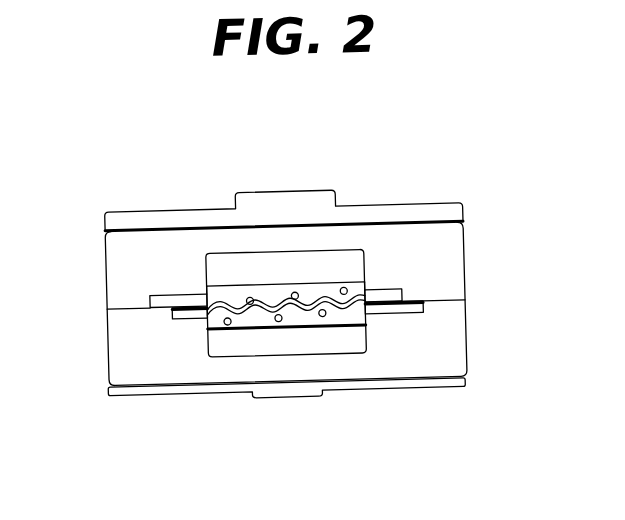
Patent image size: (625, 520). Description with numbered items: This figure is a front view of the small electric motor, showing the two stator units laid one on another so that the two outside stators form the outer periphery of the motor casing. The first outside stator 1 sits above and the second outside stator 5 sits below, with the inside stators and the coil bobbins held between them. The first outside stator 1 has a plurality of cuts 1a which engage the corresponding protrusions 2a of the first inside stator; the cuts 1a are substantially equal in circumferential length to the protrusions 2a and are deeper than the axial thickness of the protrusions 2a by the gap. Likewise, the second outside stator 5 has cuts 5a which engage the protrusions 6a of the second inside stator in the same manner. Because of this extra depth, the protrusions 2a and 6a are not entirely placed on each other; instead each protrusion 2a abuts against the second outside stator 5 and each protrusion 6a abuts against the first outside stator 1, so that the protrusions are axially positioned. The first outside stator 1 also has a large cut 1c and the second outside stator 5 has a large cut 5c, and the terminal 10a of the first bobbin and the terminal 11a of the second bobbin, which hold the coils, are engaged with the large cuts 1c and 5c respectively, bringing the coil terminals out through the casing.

The first outside stator 1 is at (446, 254).
The cuts 1a is at (176, 278).
The large cut 1c is at (227, 269).
The protrusions 2a is at (162, 293).
The second outside stator 5 is at (444, 362).
The cuts 5a is at (182, 327).
The large cut 5c is at (238, 342).
The protrusions 6a is at (172, 310).
The terminal 10a is at (312, 297).
The terminal 11a is at (302, 318).